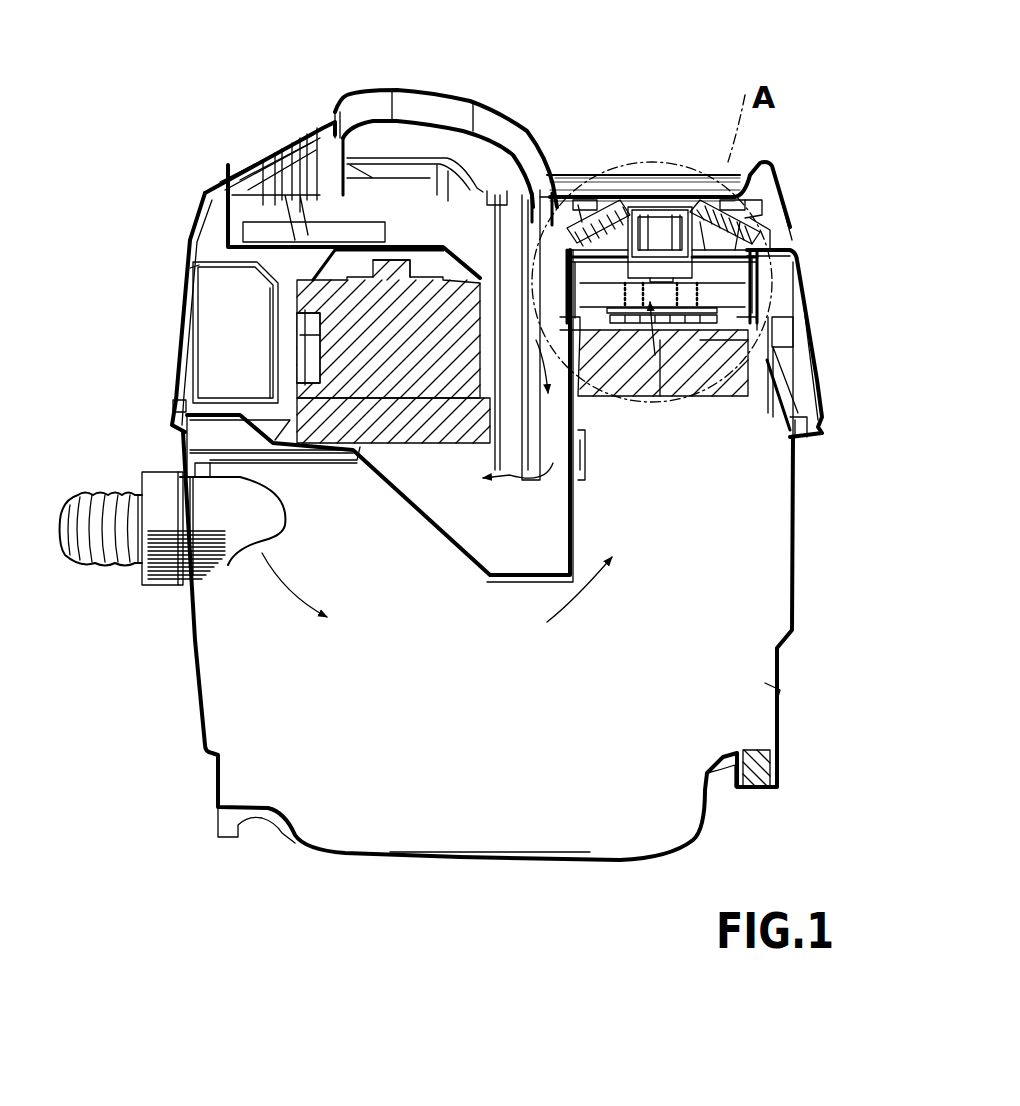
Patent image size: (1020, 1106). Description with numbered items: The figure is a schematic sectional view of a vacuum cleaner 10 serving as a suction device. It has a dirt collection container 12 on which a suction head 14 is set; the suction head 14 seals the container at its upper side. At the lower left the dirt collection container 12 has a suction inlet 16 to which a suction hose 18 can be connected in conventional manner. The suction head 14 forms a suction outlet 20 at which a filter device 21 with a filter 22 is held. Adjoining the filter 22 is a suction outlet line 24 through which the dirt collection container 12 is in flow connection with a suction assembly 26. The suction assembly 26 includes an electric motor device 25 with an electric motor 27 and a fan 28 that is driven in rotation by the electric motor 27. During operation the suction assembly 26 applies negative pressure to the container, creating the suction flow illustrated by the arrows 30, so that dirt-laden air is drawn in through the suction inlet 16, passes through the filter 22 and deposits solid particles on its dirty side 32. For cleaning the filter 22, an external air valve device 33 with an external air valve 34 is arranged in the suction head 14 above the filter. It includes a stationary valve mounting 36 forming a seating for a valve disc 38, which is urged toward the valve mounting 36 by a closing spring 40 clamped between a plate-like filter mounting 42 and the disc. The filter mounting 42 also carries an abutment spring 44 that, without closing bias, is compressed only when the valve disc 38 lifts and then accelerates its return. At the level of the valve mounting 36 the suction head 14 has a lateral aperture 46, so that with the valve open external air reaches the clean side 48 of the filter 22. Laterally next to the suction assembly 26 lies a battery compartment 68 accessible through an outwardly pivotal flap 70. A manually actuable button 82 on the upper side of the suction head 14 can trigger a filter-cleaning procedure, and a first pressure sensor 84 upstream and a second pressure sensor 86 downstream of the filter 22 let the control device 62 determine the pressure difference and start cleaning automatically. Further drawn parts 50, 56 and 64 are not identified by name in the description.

The vacuum cleaner 10 is at (806, 106).
The dirt collection container 12 is at (192, 670).
The suction head 14 is at (398, 85).
The suction inlet 16 is at (150, 570).
The suction hose 18 is at (108, 510).
The suction outlet 20 is at (755, 335).
The filter device 21 is at (703, 432).
The filter 22 is at (600, 345).
The suction outlet line 24 is at (575, 235).
The electric motor device 25 is at (335, 350).
The suction assembly 26 is at (296, 365).
The electric motor 27 is at (298, 316).
The fan 28 is at (357, 462).
The suction flow arrows 30 is at (588, 600).
The dirty side 32 is at (800, 430).
The external air valve device 33 is at (755, 203).
The external air valve 34 is at (758, 222).
The valve mounting 36 is at (578, 205).
The valve disc 38 is at (745, 282).
The closing spring 40 is at (764, 313).
The filter mounting 42 is at (700, 380).
The abutment spring 44 is at (660, 355).
The lateral aperture 46 is at (790, 240).
The clean side 48 is at (782, 388).
The fan wheel 50 is at (717, 215).
The fan hub 56 is at (660, 265).
The control device 62 is at (340, 232).
The battery pack 64 is at (212, 347).
The battery compartment 68 is at (215, 225).
The flap 70 is at (208, 195).
The button 82 is at (278, 143).
The first pressure sensor 84 is at (582, 458).
The second pressure sensor 86 is at (540, 258).